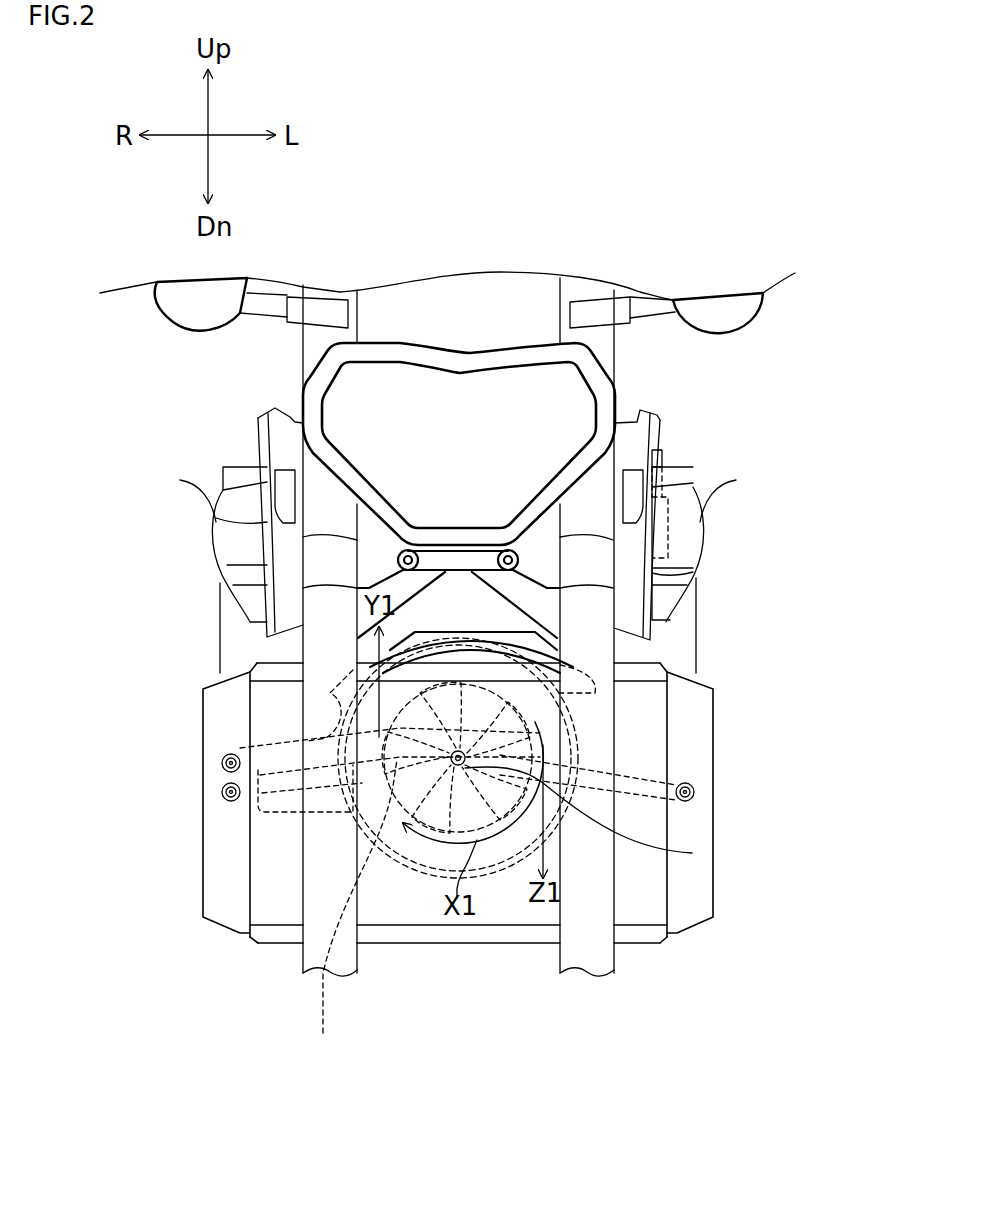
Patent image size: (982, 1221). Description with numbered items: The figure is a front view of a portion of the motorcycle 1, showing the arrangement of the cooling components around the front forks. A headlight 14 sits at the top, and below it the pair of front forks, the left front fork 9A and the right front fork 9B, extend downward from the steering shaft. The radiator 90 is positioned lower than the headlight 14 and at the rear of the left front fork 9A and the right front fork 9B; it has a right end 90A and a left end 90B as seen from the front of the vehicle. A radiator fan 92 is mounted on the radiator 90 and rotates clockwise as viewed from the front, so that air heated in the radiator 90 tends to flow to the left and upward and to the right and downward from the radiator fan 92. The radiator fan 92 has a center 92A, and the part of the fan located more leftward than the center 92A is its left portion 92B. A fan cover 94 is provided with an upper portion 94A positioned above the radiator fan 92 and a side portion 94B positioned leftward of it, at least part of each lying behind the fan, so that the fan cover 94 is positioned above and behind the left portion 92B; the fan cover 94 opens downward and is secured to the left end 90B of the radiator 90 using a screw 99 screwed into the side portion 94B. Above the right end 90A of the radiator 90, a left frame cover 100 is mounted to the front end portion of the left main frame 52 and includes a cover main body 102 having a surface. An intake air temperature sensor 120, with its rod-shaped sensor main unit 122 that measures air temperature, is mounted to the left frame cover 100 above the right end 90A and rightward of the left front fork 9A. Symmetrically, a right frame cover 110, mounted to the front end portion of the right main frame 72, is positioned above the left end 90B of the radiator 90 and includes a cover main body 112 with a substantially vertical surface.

The motorcycle 1 is at (676, 378).
The headlight 14 is at (428, 345).
The left front fork 9A is at (590, 903).
The right front fork 9B is at (327, 903).
The right frame cover 110 is at (258, 419).
The cover main body 112 is at (218, 530).
The right main frame 72 is at (220, 608).
The left frame cover 100 is at (662, 420).
The sensor main unit 122 is at (660, 453).
The intake air temperature sensor 120 is at (672, 522).
The cover main body 102 is at (660, 570).
The left main frame 52 is at (697, 607).
The fan cover 94 is at (560, 642).
The upper portion 94A is at (462, 630).
The side portion 94B is at (350, 913).
The radiator 90 is at (480, 948).
The right end 90A is at (697, 743).
The left end 90B is at (220, 745).
The screw 99 is at (222, 795).
The radiator fan 92 is at (410, 847).
The center 92A is at (692, 853).
The left portion 92B is at (373, 815).